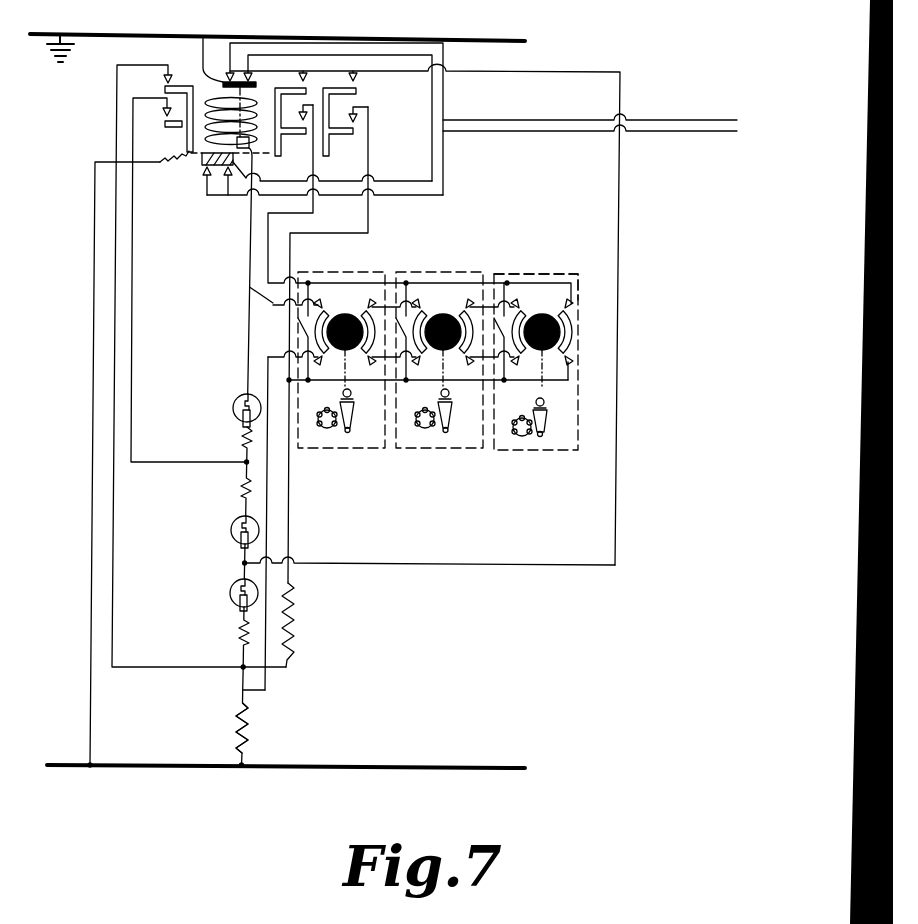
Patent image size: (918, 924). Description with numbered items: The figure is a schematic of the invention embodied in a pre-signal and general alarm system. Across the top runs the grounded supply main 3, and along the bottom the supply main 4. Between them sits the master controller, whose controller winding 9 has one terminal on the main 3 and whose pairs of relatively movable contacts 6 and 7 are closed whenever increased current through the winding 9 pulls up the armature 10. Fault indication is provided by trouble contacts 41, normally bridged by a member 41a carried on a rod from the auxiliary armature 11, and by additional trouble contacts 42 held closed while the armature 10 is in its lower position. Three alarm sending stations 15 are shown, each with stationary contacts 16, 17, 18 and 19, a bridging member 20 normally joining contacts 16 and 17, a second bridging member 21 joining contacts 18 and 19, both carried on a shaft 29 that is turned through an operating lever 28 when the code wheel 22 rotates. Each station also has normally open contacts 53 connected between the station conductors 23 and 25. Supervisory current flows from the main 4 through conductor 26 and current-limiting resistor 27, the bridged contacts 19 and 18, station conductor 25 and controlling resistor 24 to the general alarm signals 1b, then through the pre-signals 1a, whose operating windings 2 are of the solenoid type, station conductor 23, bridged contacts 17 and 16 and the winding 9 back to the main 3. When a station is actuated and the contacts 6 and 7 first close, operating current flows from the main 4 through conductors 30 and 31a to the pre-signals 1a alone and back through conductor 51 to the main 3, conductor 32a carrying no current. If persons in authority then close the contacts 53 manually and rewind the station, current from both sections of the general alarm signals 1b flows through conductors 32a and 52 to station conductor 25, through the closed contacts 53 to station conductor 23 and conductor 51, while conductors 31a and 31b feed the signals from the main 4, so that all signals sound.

The supply main 3 is at (222, 35).
The supply main 4 is at (228, 768).
The controller contacts 6 is at (357, 94).
The controller contacts 7 is at (173, 76).
The controller winding 9 is at (210, 139).
The armature 10 is at (203, 160).
The auxiliary armature 11 is at (241, 149).
The trouble contacts 41 is at (256, 83).
The bridging member 41a is at (225, 80).
The trouble contacts 42 is at (226, 170).
The conductor 51 is at (266, 258).
The conductor 52 is at (371, 236).
The conductor 30 is at (93, 478).
The conductor 31a is at (134, 275).
The conductor 31b is at (111, 371).
The pre-signals 1a is at (236, 405).
The general alarm signals 1b is at (236, 585).
The operating winding 2 is at (239, 412).
The alarm sending station 15 is at (514, 280).
The stationary contact 16 is at (533, 312).
The stationary contact 17 is at (572, 312).
The stationary contact 18 is at (572, 358).
The stationary contact 19 is at (519, 362).
The bridging member 20 is at (563, 330).
The bridging member 21 is at (545, 366).
The code wheel 22 is at (528, 450).
The station conductor 23 is at (562, 287).
The controlling resistor 24 is at (296, 632).
The station conductor 25 is at (553, 385).
The conductor 26 is at (266, 546).
The current-limiting resistor 27 is at (250, 714).
The operating lever 28 is at (548, 418).
The shaft 29 is at (344, 388).
The conductor 32a is at (395, 567).
The station contacts 53 is at (298, 321).